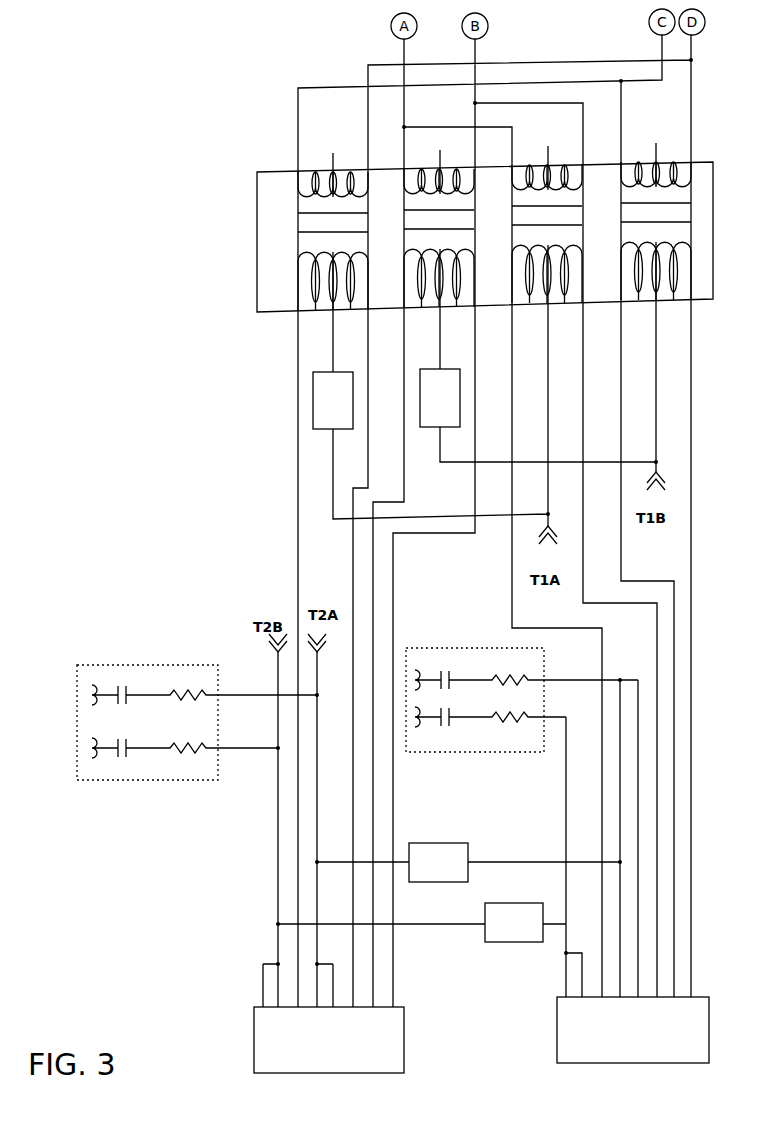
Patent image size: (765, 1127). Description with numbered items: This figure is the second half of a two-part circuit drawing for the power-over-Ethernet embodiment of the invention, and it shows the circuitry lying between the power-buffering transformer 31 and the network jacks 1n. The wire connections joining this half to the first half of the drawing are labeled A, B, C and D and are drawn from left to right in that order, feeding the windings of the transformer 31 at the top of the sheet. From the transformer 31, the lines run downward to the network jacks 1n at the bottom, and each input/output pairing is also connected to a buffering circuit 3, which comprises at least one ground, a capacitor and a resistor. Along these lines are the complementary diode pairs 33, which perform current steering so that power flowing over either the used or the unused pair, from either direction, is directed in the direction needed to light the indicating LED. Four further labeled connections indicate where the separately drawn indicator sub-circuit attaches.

The power-buffering transformer 31 is at (255, 222).
The complementary diode pair 33 is at (420, 383).
The buffering circuit 3 is at (218, 665).
The network jack 1n is at (254, 1073).